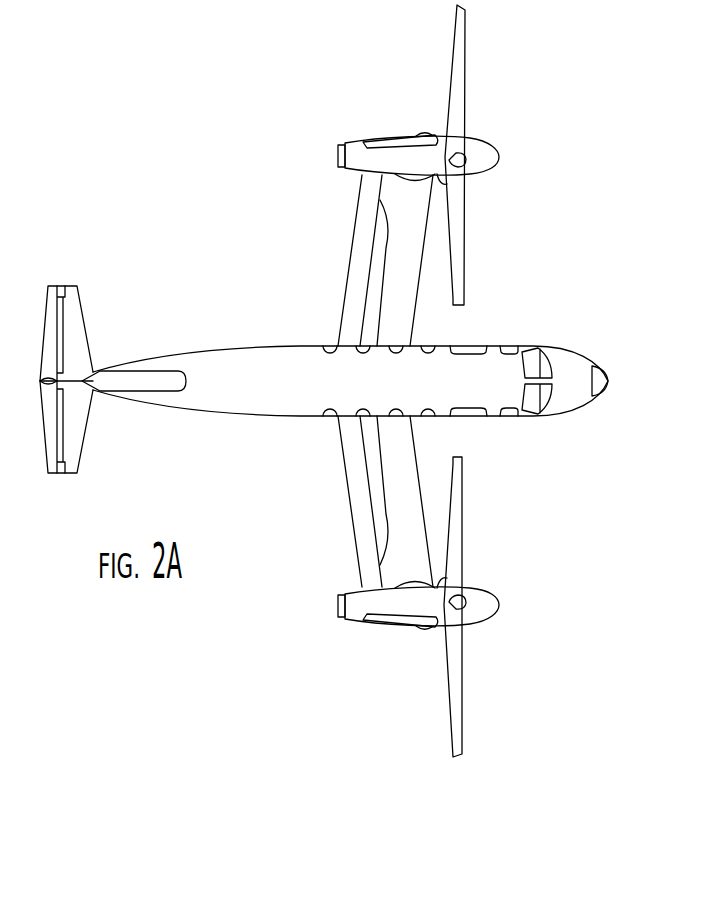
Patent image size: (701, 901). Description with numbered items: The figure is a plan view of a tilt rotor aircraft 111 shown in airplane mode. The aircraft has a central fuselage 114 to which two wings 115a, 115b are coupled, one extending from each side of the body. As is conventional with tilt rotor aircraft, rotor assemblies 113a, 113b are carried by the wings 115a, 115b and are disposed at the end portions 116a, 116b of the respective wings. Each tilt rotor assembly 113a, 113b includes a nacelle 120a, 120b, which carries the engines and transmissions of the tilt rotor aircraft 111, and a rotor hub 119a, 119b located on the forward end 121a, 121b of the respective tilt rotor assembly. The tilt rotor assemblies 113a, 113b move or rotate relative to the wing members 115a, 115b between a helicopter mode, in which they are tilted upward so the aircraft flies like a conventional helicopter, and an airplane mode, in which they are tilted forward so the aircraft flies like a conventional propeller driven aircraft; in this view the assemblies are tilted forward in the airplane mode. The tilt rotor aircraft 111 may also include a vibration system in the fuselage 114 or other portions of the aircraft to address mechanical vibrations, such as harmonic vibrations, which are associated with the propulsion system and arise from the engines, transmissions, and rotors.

The tilt rotor aircraft 111 is at (203, 322).
The tilt rotor assembly 113a is at (361, 133).
The tilt rotor assembly 113b is at (358, 630).
The fuselage 114 is at (250, 412).
The wing 115a is at (352, 250).
The wing 115b is at (352, 512).
The end portion of wing 116a is at (353, 177).
The end portion of wing 116b is at (353, 582).
The rotor hub 119a is at (497, 151).
The rotor hub 119b is at (496, 611).
The nacelle 120a is at (353, 139).
The nacelle 120b is at (353, 623).
The forward end of tilt rotor assembly 121a is at (438, 180).
The forward end of tilt rotor assembly 121b is at (438, 583).